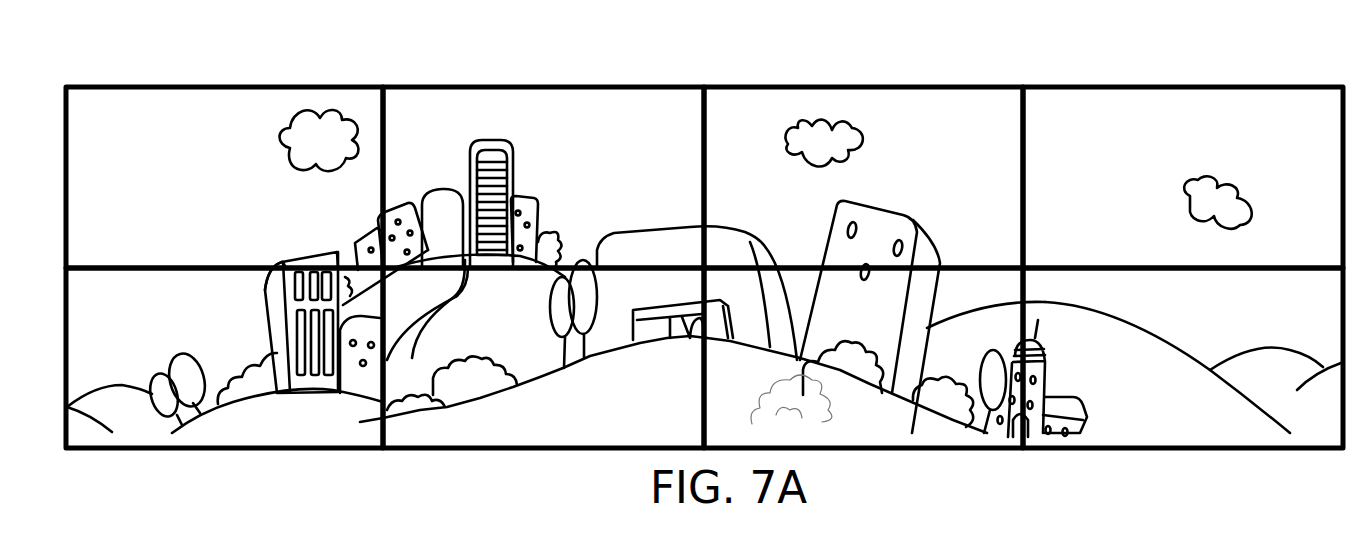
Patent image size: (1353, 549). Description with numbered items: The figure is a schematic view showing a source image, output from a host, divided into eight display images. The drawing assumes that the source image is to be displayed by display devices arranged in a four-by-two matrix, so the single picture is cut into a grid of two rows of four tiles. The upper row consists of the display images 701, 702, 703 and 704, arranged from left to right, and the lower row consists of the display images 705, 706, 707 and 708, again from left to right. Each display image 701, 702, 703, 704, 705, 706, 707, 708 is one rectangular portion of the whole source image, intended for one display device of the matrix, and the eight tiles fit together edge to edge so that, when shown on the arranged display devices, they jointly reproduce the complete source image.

The display image 701 is at (110, 98).
The display image 702 is at (455, 115).
The display image 703 is at (807, 115).
The display image 704 is at (1138, 127).
The display image 705 is at (107, 437).
The display image 706 is at (485, 423).
The display image 707 is at (950, 427).
The display image 708 is at (1177, 423).